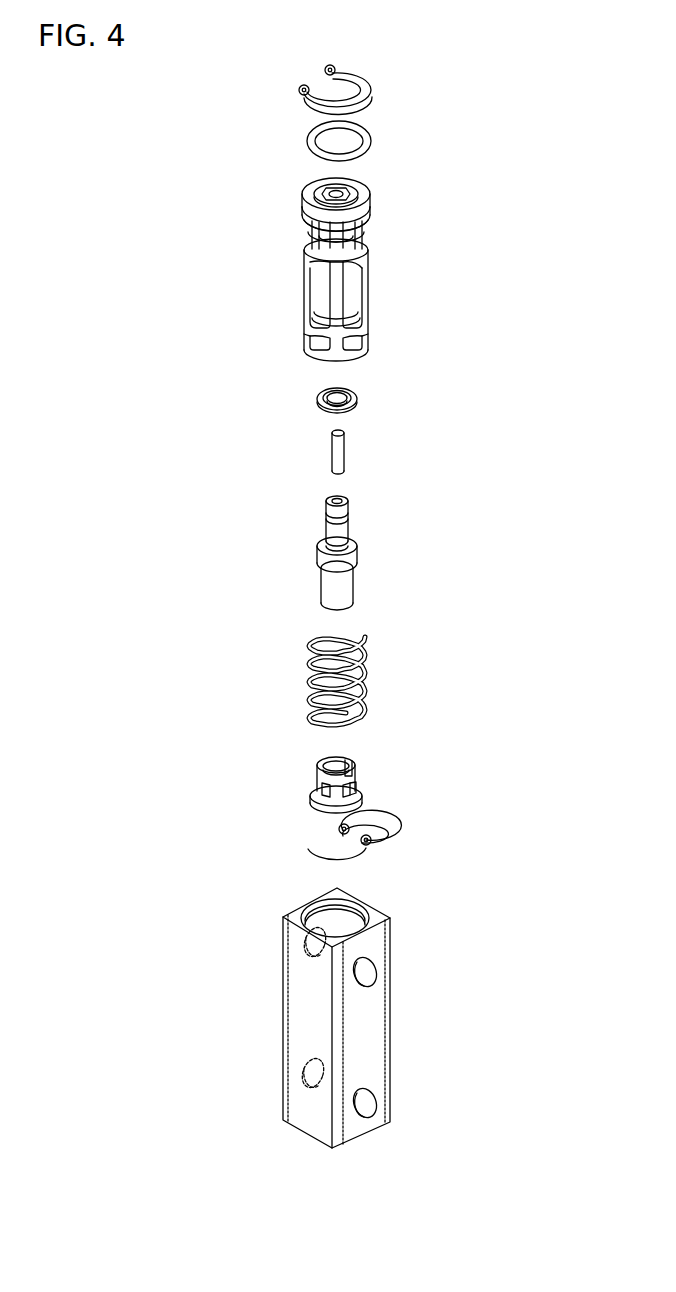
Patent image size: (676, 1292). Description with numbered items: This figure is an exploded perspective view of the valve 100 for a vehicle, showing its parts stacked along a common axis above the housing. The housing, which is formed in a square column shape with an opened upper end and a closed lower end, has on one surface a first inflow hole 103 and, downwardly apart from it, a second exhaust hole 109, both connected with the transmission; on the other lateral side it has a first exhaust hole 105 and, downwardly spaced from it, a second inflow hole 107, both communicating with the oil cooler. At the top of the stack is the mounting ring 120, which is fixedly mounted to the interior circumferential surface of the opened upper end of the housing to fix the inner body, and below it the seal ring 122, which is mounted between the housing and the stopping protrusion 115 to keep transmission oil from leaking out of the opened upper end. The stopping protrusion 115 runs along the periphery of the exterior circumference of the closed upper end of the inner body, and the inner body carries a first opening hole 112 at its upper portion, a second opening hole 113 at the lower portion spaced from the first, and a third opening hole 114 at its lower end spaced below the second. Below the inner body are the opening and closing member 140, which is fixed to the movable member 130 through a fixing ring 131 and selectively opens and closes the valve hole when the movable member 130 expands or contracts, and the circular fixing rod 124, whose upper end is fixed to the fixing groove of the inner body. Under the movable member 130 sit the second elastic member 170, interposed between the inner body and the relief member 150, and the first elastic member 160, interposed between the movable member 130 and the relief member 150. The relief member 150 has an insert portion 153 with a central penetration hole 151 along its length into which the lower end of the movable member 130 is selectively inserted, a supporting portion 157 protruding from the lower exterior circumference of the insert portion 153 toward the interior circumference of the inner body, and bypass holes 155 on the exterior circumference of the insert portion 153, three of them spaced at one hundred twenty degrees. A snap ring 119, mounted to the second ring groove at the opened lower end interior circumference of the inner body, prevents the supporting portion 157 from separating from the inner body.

The valve 100 is at (480, 77).
The mounting ring 120 is at (301, 93).
The seal ring 122 is at (305, 144).
The stopping protrusion 115 is at (372, 204).
The first opening hole 112 is at (364, 237).
The second opening hole 113 is at (370, 302).
The third opening hole 114 is at (372, 341).
The opening and closing member 140 is at (313, 402).
The fixing ring 131 is at (360, 388).
The fixing rod 124 is at (345, 445).
The movable member 130 is at (367, 553).
The second elastic member 170 is at (310, 646).
The first elastic member 160 is at (318, 685).
The relief member 150 is at (256, 748).
The insert portion 153 is at (318, 766).
The penetration hole 151 is at (350, 767).
The supporting portion 157 is at (314, 792).
The bypass hole 155 is at (358, 789).
The snap ring 119 is at (306, 845).
The first inflow hole 103 is at (298, 944).
The first exhaust hole 105 is at (378, 972).
The second exhaust hole 109 is at (300, 1070).
The second inflow hole 107 is at (378, 1103).